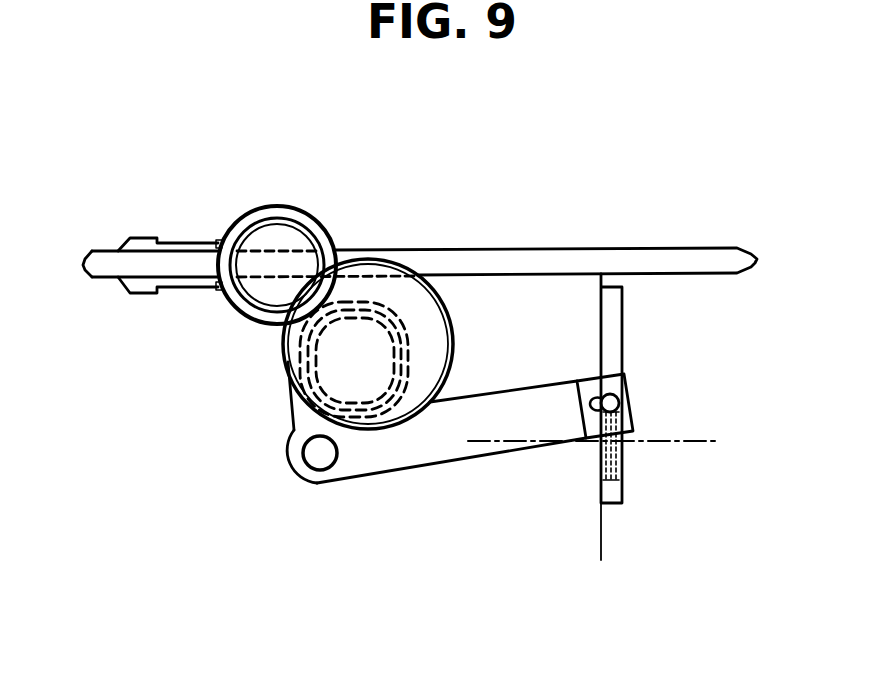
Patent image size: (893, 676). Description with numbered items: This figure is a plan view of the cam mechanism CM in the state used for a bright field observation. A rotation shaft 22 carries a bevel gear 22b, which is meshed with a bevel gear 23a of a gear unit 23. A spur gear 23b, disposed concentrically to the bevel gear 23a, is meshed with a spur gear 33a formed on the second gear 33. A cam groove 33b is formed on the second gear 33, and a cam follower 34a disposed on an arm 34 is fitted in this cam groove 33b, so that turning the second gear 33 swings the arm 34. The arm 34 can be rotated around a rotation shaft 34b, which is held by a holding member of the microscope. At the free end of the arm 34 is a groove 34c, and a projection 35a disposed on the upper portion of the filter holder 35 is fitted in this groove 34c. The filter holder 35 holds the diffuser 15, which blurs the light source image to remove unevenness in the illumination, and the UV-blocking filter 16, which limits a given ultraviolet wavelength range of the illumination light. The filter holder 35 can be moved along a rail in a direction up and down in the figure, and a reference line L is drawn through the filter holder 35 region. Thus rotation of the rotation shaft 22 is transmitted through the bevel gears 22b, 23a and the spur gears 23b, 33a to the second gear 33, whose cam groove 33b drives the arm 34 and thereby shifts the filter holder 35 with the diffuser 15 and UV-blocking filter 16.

The rotation shaft 22 is at (534, 249).
The bevel gear 22b is at (193, 293).
The bearing ring 23 is at (242, 230).
The bevel gear 23a is at (229, 227).
The spur gear 23b is at (254, 221).
The second gear 33 is at (432, 344).
The spur gear 33a is at (447, 297).
The cam groove 33b is at (410, 364).
The arm 34 is at (465, 445).
The cam follower 34a is at (285, 357).
The rotation shaft 34b is at (322, 471).
The groove 34c is at (632, 393).
The filter holder 35 is at (669, 388).
The projection 35a is at (621, 400).
The diffuser 15 is at (601, 470).
The UV-blocking filter 16 is at (623, 477).
The reference line L is at (688, 444).
The cam mechanism CM is at (286, 468).